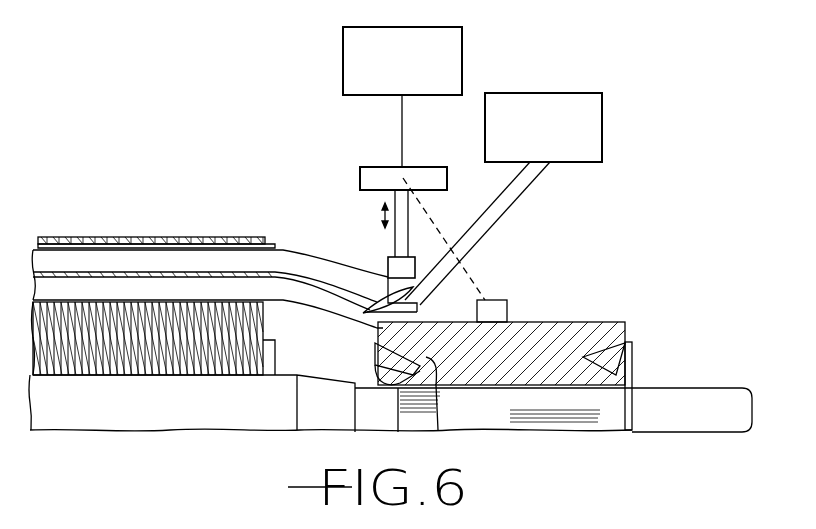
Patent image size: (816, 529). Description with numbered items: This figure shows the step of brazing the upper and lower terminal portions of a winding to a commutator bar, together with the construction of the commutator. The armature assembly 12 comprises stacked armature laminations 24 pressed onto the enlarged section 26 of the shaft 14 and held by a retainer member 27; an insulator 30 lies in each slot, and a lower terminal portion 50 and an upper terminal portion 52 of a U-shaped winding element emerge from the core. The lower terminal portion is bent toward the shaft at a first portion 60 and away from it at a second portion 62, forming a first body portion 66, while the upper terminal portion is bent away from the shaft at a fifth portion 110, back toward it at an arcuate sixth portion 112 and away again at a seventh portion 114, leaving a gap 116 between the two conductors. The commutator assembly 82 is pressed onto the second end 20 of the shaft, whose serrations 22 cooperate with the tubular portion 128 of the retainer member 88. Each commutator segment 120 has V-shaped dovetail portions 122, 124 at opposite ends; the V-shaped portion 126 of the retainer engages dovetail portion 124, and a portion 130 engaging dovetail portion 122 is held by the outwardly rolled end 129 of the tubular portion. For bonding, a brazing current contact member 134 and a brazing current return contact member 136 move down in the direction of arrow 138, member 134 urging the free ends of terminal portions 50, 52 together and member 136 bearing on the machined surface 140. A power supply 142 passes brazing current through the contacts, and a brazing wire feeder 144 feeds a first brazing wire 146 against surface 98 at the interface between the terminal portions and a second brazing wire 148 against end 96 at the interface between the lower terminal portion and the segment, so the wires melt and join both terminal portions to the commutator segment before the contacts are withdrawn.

The armature assembly 12 is at (88, 207).
The shaft 14 is at (733, 370).
The second end 20 is at (688, 403).
The serrations 22 is at (607, 403).
The armature laminations 24 is at (128, 237).
The enlarged section 26 is at (165, 403).
The retainer member 27 is at (268, 368).
The insulator 30 is at (183, 303).
The lower terminal portion 50 is at (312, 262).
The upper terminal portion 52 is at (297, 260).
The first portion 60 is at (290, 287).
The second portion 62 is at (335, 288).
The first body portion 66 is at (308, 287).
The commutator assembly 82 is at (603, 297).
The retainer member 88 is at (632, 370).
The end 96 is at (377, 323).
The surface 98 is at (363, 310).
The fifth portion 110 is at (287, 250).
The sixth portion 112 is at (325, 257).
The seventh portion 114 is at (362, 260).
The gap 116 is at (323, 297).
The commutator segment 120 is at (603, 325).
The dovetail portion 122 is at (432, 353).
The dovetail portion 124 is at (577, 357).
The V-shaped portion 126 is at (615, 373).
The tubular portion 128 is at (523, 357).
The end 129 is at (378, 358).
The portion 130 is at (388, 360).
The brazing current contact member 134 is at (415, 256).
The brazing current return contact member 136 is at (497, 312).
The arrow 138 is at (378, 215).
The machined surface 140 is at (555, 315).
The power supply 142 is at (452, 53).
The brazing wire feeder 144 is at (593, 123).
The first brazing wire 146 is at (505, 181).
The second brazing wire 148 is at (510, 200).